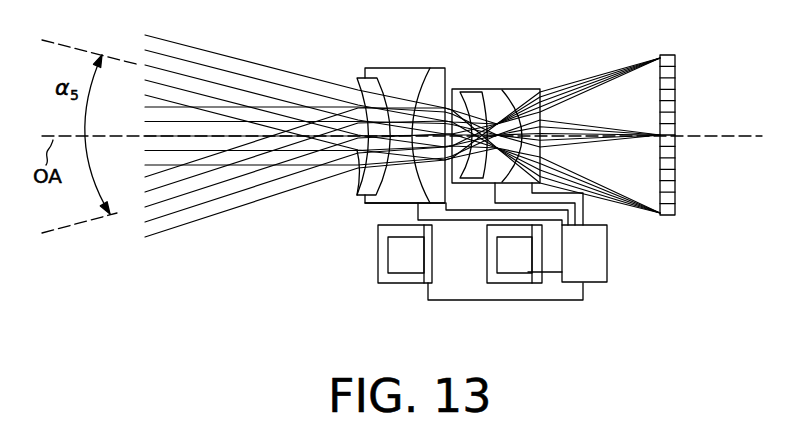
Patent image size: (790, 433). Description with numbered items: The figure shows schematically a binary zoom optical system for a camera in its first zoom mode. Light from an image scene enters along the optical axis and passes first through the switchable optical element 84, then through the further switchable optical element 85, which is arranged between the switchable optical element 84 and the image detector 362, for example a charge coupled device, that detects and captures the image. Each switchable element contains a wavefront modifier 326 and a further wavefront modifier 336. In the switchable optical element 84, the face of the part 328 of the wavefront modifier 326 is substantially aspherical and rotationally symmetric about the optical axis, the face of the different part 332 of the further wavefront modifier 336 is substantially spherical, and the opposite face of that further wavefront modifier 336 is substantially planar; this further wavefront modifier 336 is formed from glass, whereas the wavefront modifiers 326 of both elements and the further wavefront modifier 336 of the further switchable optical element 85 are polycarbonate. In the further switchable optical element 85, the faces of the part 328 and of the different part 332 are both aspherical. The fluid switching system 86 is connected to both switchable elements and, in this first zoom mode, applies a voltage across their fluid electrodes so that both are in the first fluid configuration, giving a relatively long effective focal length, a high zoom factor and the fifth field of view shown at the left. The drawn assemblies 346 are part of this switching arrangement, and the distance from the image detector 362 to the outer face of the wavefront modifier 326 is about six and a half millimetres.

The switchable optical element 84 is at (395, 68).
The further switchable optical element 85 is at (500, 89).
The fluid switching system 86 is at (608, 255).
The wavefront modifier 326 is at (357, 78).
The part of the wavefront modifier 328 is at (357, 180).
The different part of the further wavefront modifier 332 is at (392, 204).
The further wavefront modifier 336 is at (430, 68).
The actuator 346 is at (393, 260).
The image detector 362 is at (676, 74).